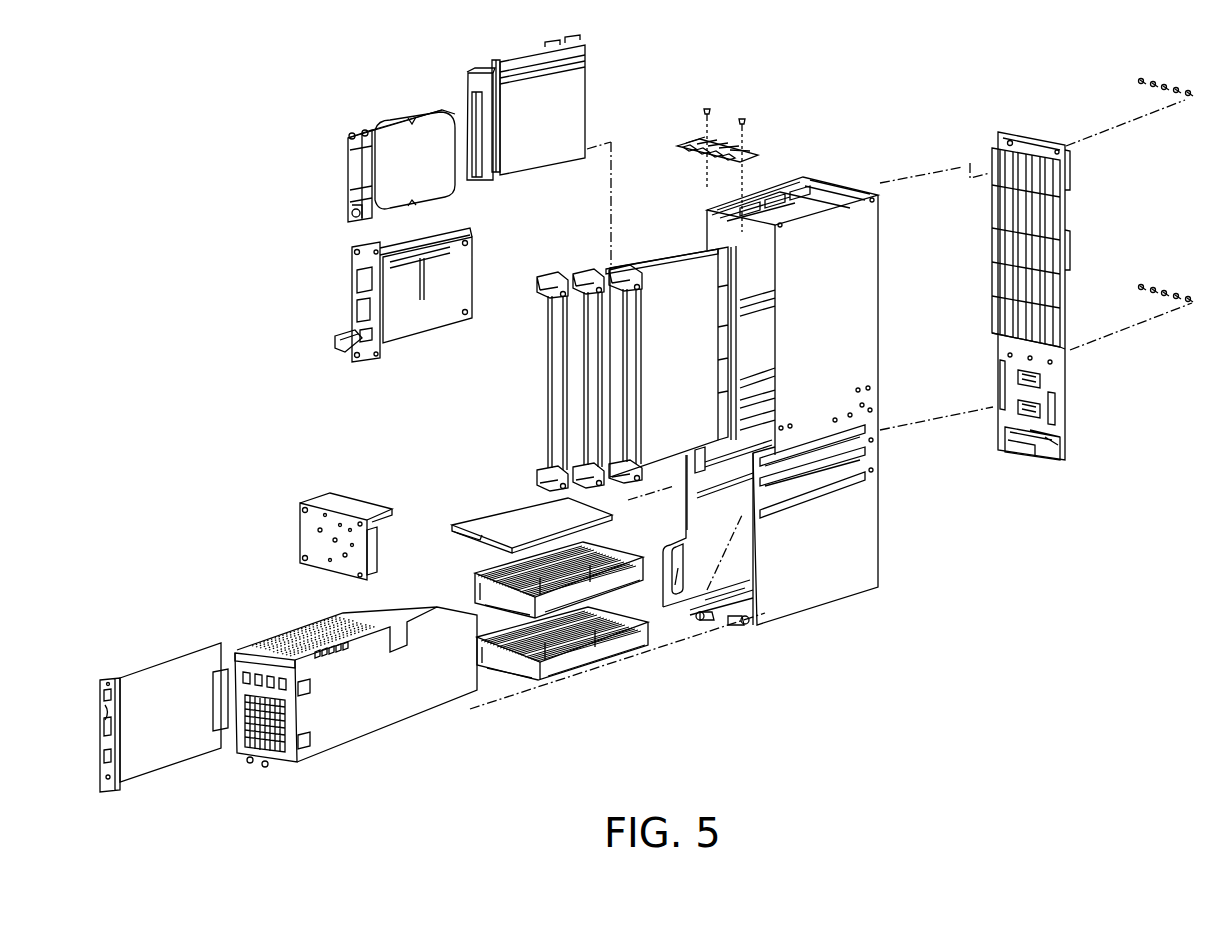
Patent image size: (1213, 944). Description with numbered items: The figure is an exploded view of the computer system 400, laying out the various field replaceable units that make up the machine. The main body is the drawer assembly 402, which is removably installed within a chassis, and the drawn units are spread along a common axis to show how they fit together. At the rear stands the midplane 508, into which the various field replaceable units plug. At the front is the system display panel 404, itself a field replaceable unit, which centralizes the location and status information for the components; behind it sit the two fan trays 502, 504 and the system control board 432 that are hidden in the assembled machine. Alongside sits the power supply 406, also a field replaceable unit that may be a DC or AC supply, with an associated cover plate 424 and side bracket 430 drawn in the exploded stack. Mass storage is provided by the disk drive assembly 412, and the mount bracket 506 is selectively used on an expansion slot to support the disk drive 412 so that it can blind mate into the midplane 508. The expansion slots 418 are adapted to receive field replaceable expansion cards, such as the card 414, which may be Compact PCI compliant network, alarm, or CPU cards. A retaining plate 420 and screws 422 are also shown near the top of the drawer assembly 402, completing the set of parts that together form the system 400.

The computer system 400 is at (928, 98).
The drawer assembly 402 is at (817, 583).
The system display panel 404 is at (323, 530).
The power supply 406 is at (285, 760).
The disk drive assembly 412 is at (352, 171).
The circuit board card 414 is at (358, 282).
The expansion slots 418 is at (628, 380).
The retaining plate 420 is at (747, 150).
The screws 422 is at (742, 120).
The cover plate 424 is at (583, 527).
The side bracket 430 is at (668, 550).
The circuit board 432 is at (165, 675).
The lower fan tray 502 is at (512, 660).
The upper fan tray 504 is at (558, 590).
The mount bracket 506 is at (527, 95).
The midplane 508 is at (1036, 142).